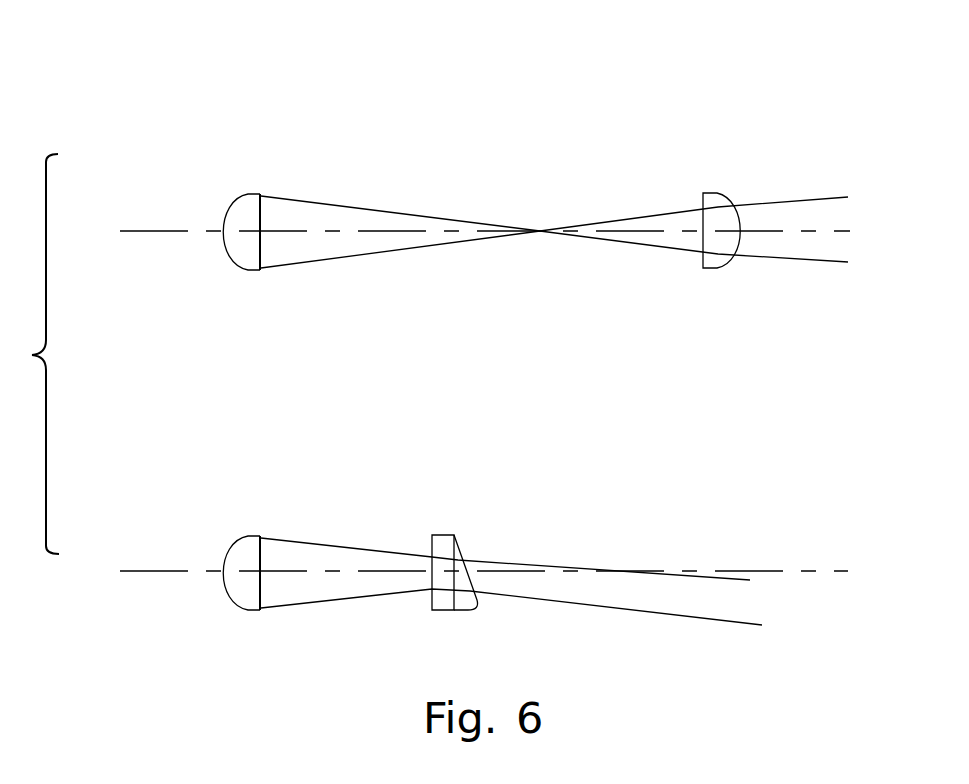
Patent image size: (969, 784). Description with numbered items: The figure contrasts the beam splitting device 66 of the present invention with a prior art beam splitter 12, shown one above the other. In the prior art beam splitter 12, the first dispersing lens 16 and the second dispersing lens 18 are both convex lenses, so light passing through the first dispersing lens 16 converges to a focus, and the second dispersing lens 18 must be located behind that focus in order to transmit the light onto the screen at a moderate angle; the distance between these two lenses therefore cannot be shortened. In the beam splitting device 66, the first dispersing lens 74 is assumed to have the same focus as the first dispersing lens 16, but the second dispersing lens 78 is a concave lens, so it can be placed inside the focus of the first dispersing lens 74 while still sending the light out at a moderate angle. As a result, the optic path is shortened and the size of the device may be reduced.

The prior art beam splitter 12 is at (483, 52).
The first dispersing lens 16 is at (230, 210).
The second dispersing lens 18 is at (718, 197).
The beam splitting device 66 is at (460, 390).
The first dispersing lens 74 is at (232, 548).
The second dispersing lens 78 is at (443, 535).